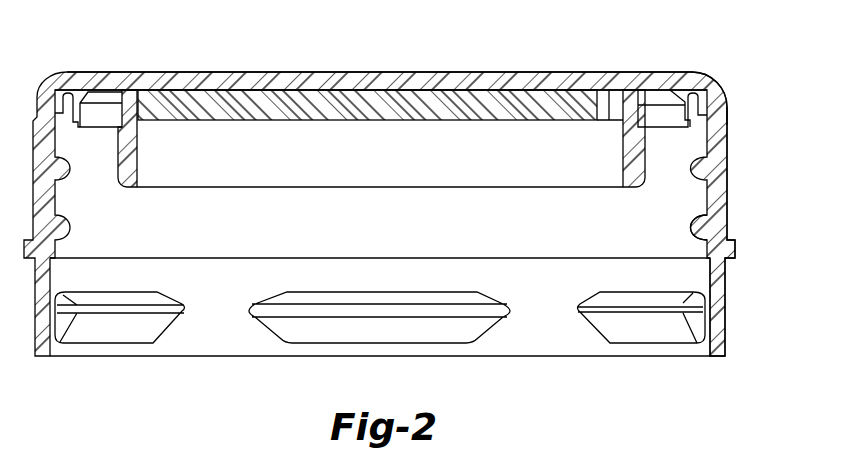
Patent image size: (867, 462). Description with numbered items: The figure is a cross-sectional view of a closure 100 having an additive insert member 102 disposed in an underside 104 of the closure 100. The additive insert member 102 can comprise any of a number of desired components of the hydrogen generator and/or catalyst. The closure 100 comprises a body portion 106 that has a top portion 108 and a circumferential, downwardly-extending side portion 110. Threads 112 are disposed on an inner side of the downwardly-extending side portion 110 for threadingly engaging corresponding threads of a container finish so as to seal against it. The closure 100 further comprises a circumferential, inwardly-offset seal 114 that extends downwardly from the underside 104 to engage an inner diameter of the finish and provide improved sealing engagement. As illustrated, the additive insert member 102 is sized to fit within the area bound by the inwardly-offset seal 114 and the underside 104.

The closure 100 is at (777, 125).
The additive insert member 102 is at (462, 120).
The underside 104 is at (610, 125).
The body portion 106 is at (705, 88).
The top portion 108 is at (421, 80).
The downwardly-extending side portion 110 is at (720, 170).
The threads 112 is at (690, 229).
The inwardly-offset seal 114 is at (643, 172).